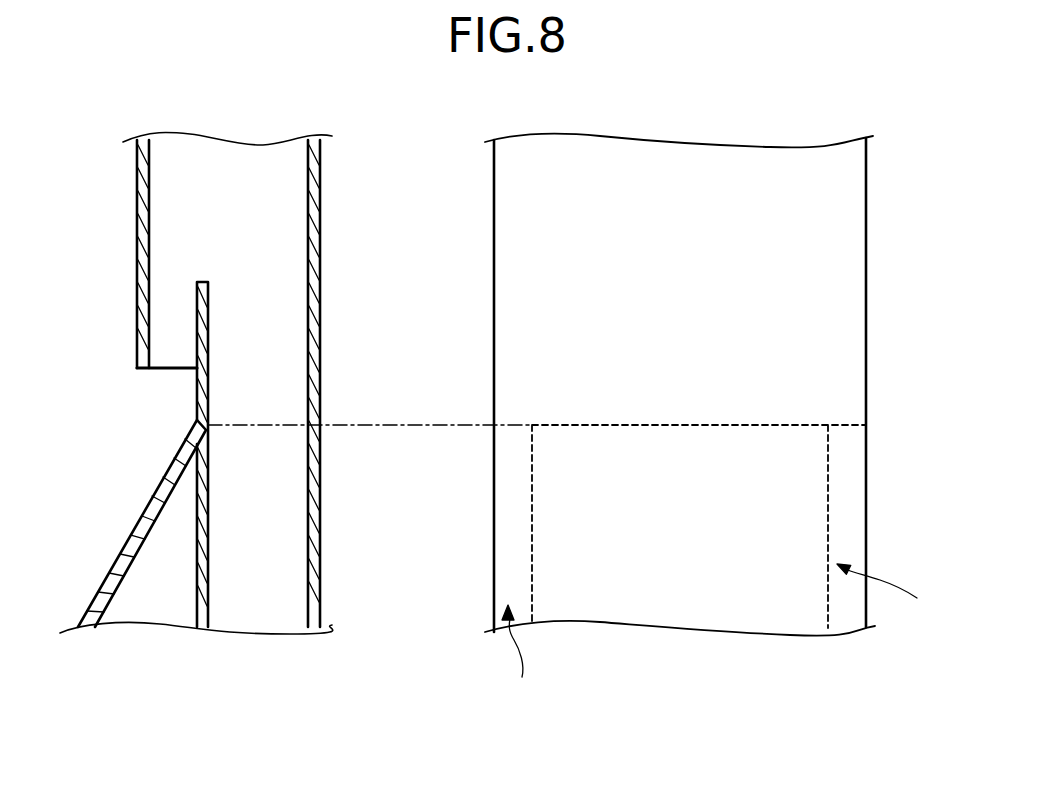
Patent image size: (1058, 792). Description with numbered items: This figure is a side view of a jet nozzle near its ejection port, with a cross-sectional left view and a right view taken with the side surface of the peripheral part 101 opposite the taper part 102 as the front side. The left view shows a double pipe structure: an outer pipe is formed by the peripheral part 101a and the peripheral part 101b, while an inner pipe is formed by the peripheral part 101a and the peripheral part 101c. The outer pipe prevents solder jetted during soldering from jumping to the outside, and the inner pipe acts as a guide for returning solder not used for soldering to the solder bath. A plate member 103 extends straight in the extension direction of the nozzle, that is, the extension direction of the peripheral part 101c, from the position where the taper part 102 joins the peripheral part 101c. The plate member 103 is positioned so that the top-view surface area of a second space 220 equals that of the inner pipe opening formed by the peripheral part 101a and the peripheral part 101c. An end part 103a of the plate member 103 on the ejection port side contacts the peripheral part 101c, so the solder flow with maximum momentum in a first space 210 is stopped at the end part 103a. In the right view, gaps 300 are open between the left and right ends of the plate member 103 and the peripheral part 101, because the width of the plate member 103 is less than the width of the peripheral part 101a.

The peripheral part 101 is at (492, 610).
The peripheral part 101a is at (315, 202).
The peripheral part 101b is at (137, 238).
The peripheral part 101c is at (197, 338).
The taper part 102 is at (151, 498).
The plate member 103 is at (208, 557).
The end part 103a is at (208, 427).
The first space 210 is at (157, 605).
The second space 220 is at (262, 523).
The gaps 300 is at (730, 638).